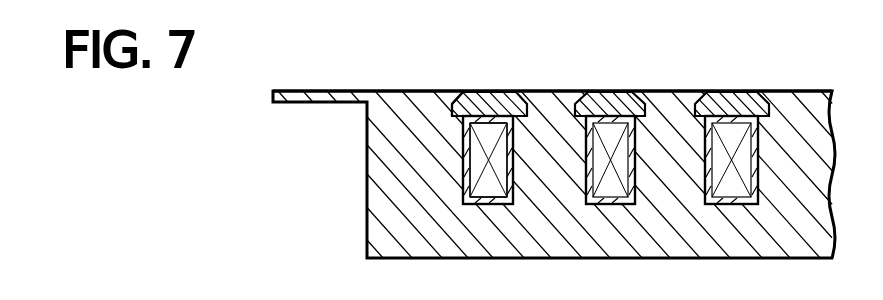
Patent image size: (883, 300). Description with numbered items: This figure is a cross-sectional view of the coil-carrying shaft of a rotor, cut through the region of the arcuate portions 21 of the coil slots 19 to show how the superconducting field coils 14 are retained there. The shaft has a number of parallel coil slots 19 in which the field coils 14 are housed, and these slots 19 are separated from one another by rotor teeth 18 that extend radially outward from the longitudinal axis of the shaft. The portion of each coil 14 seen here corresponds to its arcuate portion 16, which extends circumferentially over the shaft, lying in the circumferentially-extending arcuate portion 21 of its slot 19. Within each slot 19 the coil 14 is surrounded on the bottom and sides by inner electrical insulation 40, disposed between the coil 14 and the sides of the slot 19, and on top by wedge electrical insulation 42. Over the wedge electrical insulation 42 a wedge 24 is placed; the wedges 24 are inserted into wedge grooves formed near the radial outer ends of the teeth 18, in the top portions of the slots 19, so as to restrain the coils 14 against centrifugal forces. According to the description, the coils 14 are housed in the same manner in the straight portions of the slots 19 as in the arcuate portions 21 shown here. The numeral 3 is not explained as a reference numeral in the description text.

The body 3 is at (790, 222).
The superconducting field coil 14 is at (488, 187).
The arcuate portion 16 is at (463, 155).
The rotor tooth 18 is at (548, 103).
The coil slot 19 is at (463, 178).
The arcuate portion 21 is at (513, 148).
The wedge 24 is at (495, 102).
The inner electrical insulation 40 is at (500, 183).
The wedge electrical insulation 42 is at (465, 92).